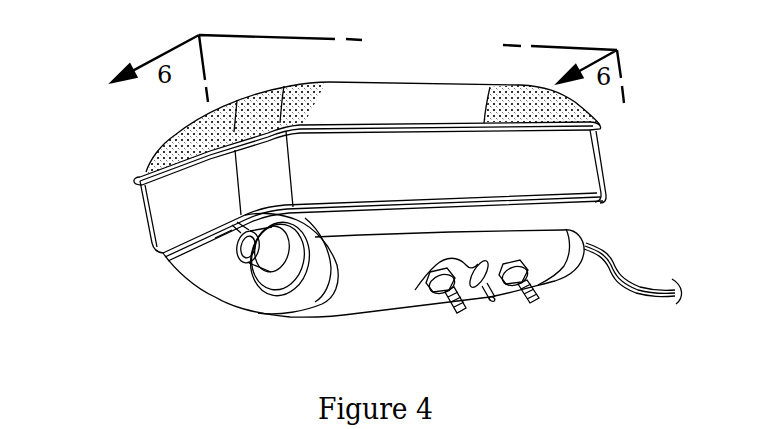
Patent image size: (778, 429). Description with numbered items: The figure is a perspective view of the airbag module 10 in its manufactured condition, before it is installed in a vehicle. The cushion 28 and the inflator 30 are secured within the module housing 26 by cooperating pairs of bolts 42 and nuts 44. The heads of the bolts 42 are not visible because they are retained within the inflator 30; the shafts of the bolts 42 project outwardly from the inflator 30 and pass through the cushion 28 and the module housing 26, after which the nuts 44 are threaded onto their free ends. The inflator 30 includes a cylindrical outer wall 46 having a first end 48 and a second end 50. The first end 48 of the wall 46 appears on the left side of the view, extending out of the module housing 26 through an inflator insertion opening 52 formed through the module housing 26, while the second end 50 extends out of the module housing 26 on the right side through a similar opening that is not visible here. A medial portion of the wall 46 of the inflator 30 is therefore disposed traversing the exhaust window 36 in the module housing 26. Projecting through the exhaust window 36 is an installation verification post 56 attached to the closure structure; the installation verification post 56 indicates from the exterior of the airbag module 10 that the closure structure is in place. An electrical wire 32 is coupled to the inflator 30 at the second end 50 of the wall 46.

The airbag module 10 is at (120, 137).
The module housing 26 is at (521, 244).
The cushion 28 is at (405, 99).
The inflator 30 is at (237, 253).
The electrical wire 32 is at (625, 253).
The exhaust window 36 is at (415, 290).
The bolts 42 is at (533, 299).
The nuts 44 is at (505, 279).
The cylindrical outer wall 46 is at (316, 259).
The first end 48 is at (307, 256).
The second end 50 is at (567, 266).
The inflator insertion opening 52 is at (310, 297).
The installation verification post 56 is at (490, 306).